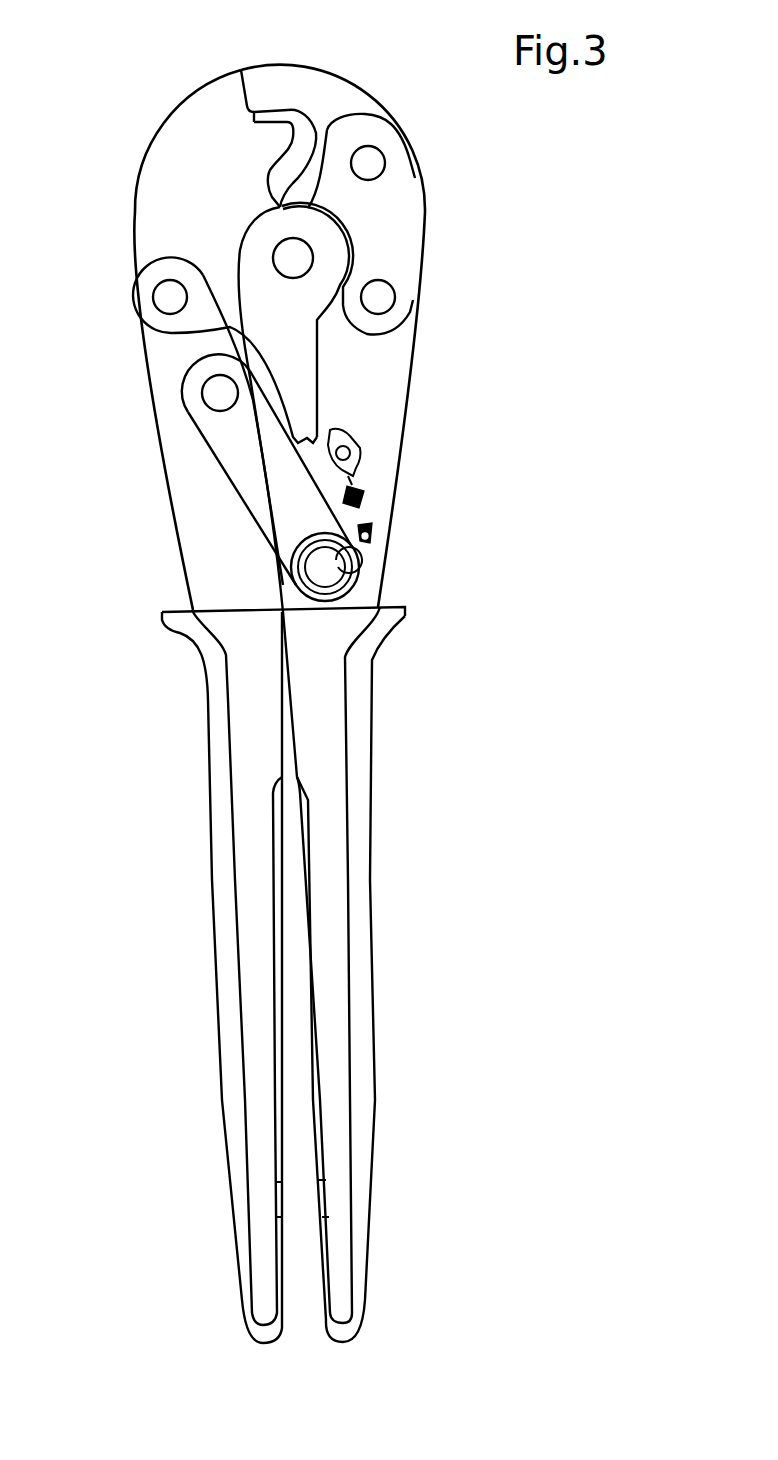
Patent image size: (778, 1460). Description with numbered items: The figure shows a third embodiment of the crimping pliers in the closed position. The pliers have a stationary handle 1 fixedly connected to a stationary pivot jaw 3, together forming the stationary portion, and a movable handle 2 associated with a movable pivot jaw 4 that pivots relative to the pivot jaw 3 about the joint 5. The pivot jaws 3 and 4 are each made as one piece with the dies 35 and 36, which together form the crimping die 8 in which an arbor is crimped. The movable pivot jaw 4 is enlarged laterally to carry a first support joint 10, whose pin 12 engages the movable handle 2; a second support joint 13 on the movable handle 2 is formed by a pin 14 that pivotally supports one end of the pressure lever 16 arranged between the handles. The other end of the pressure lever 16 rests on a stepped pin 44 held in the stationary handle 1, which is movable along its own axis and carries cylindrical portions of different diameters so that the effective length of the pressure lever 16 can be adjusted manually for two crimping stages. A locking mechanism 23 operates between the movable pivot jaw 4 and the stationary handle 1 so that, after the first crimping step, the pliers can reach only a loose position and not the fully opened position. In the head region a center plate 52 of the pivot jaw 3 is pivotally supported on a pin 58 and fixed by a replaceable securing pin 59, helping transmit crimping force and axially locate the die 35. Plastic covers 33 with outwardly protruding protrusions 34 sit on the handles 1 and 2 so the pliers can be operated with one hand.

The stationary handle 1 is at (385, 861).
The movable handle 2 is at (205, 845).
The stationary pivot jaw 3 is at (345, 97).
The movable pivot jaw 4 is at (172, 145).
The joint 5 is at (293, 258).
The crimping die 8 is at (302, 128).
The first support joint 10 is at (122, 273).
The pin 12 is at (162, 296).
The second support joint 13 is at (175, 392).
The pin 14 is at (213, 395).
The pressure lever 16 is at (217, 463).
The locking mechanism 23 is at (343, 418).
The plastic covers 33 is at (357, 765).
The protrusions 34 is at (397, 612).
The die 35 is at (317, 108).
The die 36 is at (287, 137).
The stepped pin 44 is at (325, 567).
The center plate 52 is at (392, 213).
The pin 58 is at (378, 297).
The securing pin 59 is at (368, 163).